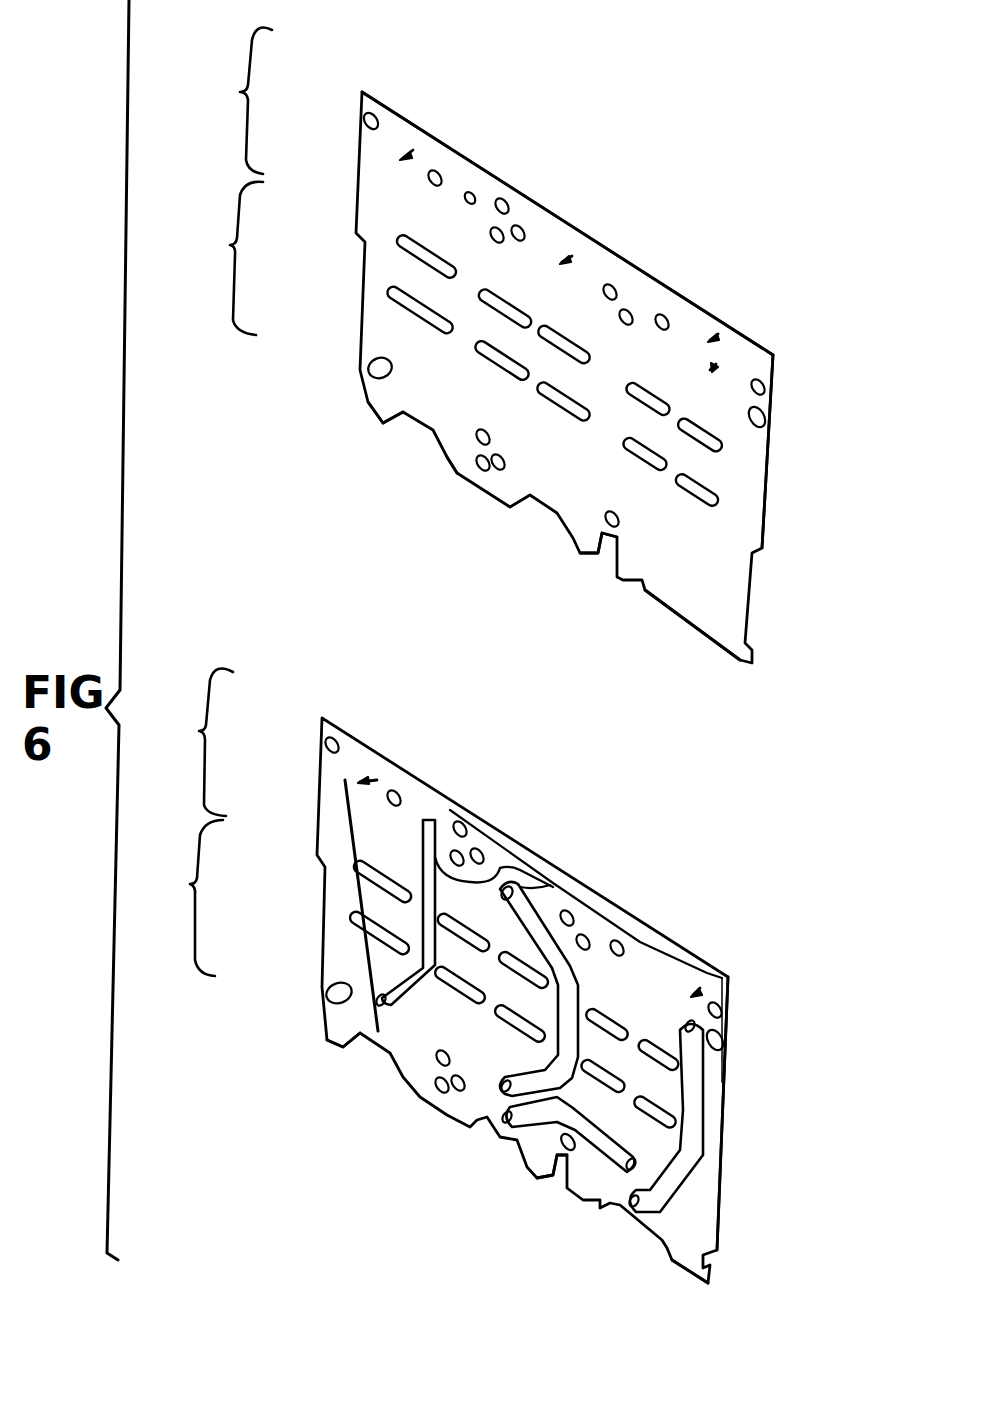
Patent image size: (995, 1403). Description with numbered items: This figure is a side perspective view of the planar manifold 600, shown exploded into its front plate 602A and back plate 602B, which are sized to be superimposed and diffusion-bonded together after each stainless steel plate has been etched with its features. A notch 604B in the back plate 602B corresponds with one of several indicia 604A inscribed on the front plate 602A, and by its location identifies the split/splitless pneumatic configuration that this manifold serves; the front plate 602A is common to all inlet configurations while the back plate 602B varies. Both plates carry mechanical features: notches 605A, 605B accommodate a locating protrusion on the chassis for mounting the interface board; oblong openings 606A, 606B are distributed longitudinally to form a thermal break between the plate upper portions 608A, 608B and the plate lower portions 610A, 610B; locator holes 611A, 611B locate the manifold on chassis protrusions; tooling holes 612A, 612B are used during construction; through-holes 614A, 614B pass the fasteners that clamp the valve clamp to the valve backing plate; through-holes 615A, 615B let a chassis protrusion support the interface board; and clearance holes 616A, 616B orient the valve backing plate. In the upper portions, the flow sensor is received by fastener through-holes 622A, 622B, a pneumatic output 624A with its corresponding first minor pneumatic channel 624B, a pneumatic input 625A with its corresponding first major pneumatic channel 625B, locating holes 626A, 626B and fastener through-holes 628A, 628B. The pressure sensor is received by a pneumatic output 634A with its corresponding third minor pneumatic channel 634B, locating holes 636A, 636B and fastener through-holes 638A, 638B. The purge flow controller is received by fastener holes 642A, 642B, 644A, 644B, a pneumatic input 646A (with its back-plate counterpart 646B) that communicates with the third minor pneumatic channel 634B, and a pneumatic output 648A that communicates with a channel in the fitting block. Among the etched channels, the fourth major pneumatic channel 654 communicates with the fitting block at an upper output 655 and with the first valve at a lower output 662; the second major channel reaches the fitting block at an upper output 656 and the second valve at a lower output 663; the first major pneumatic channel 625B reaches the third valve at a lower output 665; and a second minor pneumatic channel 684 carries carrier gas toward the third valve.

The planar manifold 600 is at (703, 101).
The front plate 602A is at (617, 582).
The back plate 602B is at (577, 1200).
The indicia 604A is at (717, 632).
The notch 604B is at (673, 1257).
The notch 605A is at (365, 405).
The notch 605B is at (322, 1027).
The oblong openings 606A is at (397, 308).
The oblong openings 606B is at (345, 930).
The plate upper portion 608A is at (221, 101).
The plate upper portion 608B is at (180, 742).
The plate lower portion 610A is at (210, 258).
The plate lower portion 610B is at (171, 898).
The locator hole 611A is at (398, 295).
The locator hole 611B is at (330, 915).
The tooling hole 612A is at (370, 372).
The tooling hole 612B is at (328, 993).
The through-hole 614A is at (480, 435).
The through-hole 614B is at (440, 1060).
The through-hole 615A is at (478, 465).
The through-hole 615B is at (437, 1090).
The clearance hole 616A is at (505, 465).
The clearance hole 616B is at (458, 1080).
The fastener through-hole 622A is at (378, 117).
The fastener through-hole 622B is at (338, 740).
The pneumatic output 624A is at (403, 158).
The first minor pneumatic channel 624B is at (367, 782).
The pneumatic input 625A is at (473, 196).
The first major pneumatic channel 625B is at (456, 815).
The locating hole 626A is at (438, 175).
The locating hole 626B is at (402, 793).
The fastener through-hole 628A is at (491, 235).
The fastener through-hole 628B is at (423, 843).
The pneumatic output 634A is at (562, 262).
The third minor pneumatic channel 634B is at (520, 886).
The locating hole 636A is at (525, 238).
The locating hole 636B is at (485, 860).
The fastener through-hole 638A is at (508, 207).
The fastener through-hole 638B is at (468, 833).
The fastener hole 642A is at (666, 320).
The fastener hole 642B is at (623, 950).
The fastener hole 644A is at (763, 386).
The fastener hole 644B is at (720, 1010).
The pneumatic input 646A is at (710, 340).
The septum purge slot 646B is at (693, 995).
The pneumatic output 648A is at (710, 370).
The fourth major pneumatic channel 654 is at (678, 1168).
The upper output 655 is at (723, 1082).
The upper output 656 is at (502, 896).
The lower output 662 is at (625, 1205).
The lower output 663 is at (500, 1110).
The lower output 665 is at (385, 998).
The second minor pneumatic channel 684 is at (345, 812).